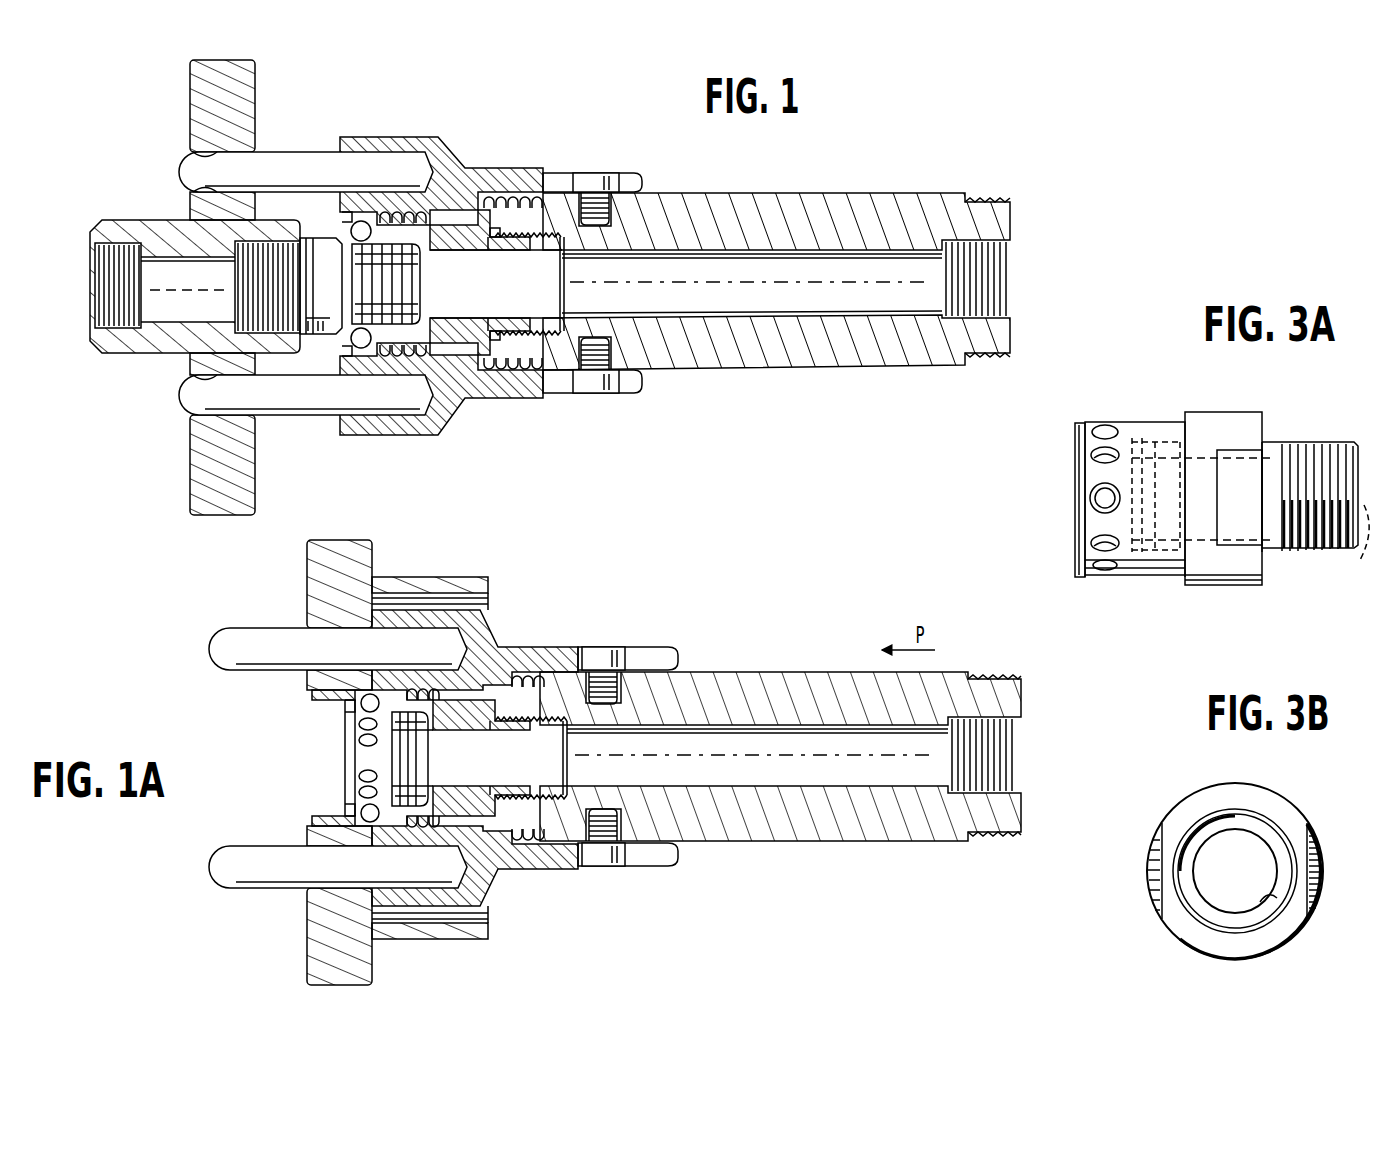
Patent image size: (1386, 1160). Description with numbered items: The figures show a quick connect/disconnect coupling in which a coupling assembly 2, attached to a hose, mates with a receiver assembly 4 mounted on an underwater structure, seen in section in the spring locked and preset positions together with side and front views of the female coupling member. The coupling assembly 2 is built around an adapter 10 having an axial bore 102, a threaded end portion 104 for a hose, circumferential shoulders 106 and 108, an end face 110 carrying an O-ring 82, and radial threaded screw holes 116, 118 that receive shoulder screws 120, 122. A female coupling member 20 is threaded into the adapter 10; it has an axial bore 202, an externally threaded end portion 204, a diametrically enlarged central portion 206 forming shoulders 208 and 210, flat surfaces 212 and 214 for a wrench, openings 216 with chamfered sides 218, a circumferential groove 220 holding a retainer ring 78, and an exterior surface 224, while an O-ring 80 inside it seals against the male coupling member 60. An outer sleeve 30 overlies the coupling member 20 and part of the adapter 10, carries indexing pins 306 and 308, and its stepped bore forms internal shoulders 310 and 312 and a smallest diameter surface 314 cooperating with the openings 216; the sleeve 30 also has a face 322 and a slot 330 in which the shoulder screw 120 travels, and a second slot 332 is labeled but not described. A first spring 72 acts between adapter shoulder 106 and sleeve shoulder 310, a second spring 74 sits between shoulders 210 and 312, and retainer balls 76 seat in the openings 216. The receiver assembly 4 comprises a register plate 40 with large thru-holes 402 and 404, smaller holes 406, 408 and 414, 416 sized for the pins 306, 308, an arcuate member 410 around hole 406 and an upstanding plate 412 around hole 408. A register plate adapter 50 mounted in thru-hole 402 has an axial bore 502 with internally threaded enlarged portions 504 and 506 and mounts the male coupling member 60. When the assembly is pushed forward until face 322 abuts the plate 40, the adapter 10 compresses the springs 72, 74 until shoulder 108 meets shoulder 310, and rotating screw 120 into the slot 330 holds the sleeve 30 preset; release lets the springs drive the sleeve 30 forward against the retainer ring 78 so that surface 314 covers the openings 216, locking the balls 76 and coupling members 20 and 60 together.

In FIG. 1, the coupling assembly 2 is at (746, 390).
In FIG. 1A, the coupling assembly 2 is at (852, 844).
In FIG. 1, the receiver assembly 4 is at (140, 452).
In FIG. 1, the adapter member 10 is at (780, 194).
In FIG. 1A, the adapter member 10 is at (752, 672).
In FIG. 1, the female coupling member 20 is at (470, 400).
In FIG. 1A, the female coupling member 20 is at (445, 758).
In FIG. 3A, the female coupling member 20 is at (1250, 404).
In FIG. 3B, the female coupling member 20 is at (1295, 800).
In FIG. 1, the outer sleeve 30 is at (508, 168).
In FIG. 1, the register plate 40 is at (195, 497).
In FIG. 1A, the register plate 40 is at (305, 940).
In FIG. 1, the register plate adapter 50 is at (112, 352).
In FIG. 1, the male coupling member 60 is at (310, 294).
In FIG. 1, the first spring 72 is at (508, 398).
In FIG. 1A, the first spring 72 is at (520, 676).
In FIG. 1, the second spring 74 is at (402, 362).
In FIG. 1A, the second spring 74 is at (421, 689).
In FIG. 1, the retainer balls 76 is at (352, 343).
In FIG. 1A, the retainer balls 76 is at (362, 810).
In FIG. 1, the retainer ring 78 is at (356, 221).
In FIG. 1, the O-ring 80 is at (392, 322).
In FIG. 1A, the O-ring 80 is at (412, 759).
In FIG. 1, the O-ring 82 is at (480, 250).
In FIG. 1, the axial bore 102 is at (777, 294).
In FIG. 1, the threaded end portion 104 is at (987, 201).
In FIG. 1, the circumferential shoulder 106 is at (540, 192).
In FIG. 1A, the circumferential shoulder 106 is at (548, 862).
In FIG. 1, the circumferential shoulder 108 is at (510, 335).
In FIG. 1A, the end face 110 is at (476, 846).
In FIG. 1, the threaded screw hole 116 is at (610, 213).
In FIG. 1, the threaded screw hole 118 is at (612, 345).
In FIG. 1, the shoulder screw 120 is at (598, 172).
In FIG. 1A, the shoulder screw 120 is at (604, 647).
In FIG. 1, the shoulder screw 122 is at (612, 395).
In FIG. 1A, the shoulder screw 122 is at (606, 867).
In FIG. 1, the axial bore 202 is at (566, 312).
In FIG. 1A, the axial bore 202 is at (531, 758).
In FIG. 3A, the axial bore 202 is at (1362, 556).
In FIG. 3B, the axial bore 202 is at (1290, 905).
In FIG. 3A, the threaded end portion 204 is at (1322, 445).
In FIG. 3B, the threaded end portion 204 is at (1200, 918).
In FIG. 3A, the central portion 206 is at (1202, 412).
In FIG. 3B, the central portion 206 is at (1178, 812).
In FIG. 1, the circumferential shoulder 208 is at (488, 330).
In FIG. 1A, the circumferential shoulder 208 is at (488, 795).
In FIG. 3A, the circumferential shoulder 208 is at (1266, 430).
In FIG. 3B, the circumferential shoulder 208 is at (1283, 940).
In FIG. 1, the circumferential shoulder 210 is at (480, 282).
In FIG. 1A, the circumferential shoulder 210 is at (432, 812).
In FIG. 3A, the circumferential shoulder 210 is at (1184, 428).
In FIG. 3A, the flat surface 212 is at (1225, 504).
In FIG. 3B, the flat surface 212 is at (1160, 875).
In FIG. 3B, the flat surface 214 is at (1318, 876).
In FIG. 3A, the openings 216 is at (1090, 462).
In FIG. 3A, the chamfered sides 218 is at (1090, 545).
In FIG. 3A, the circumferential groove 220 is at (1082, 420).
In FIG. 3A, the exterior surface 224 is at (1100, 578).
In FIG. 1, the indexing pin 306 is at (282, 156).
In FIG. 1A, the indexing pin 306 is at (215, 650).
In FIG. 1, the indexing pin 308 is at (300, 414).
In FIG. 1A, the indexing pin 308 is at (215, 870).
In FIG. 1, the internal shoulder 310 is at (490, 195).
In FIG. 1A, the internal shoulder 310 is at (520, 862).
In FIG. 1, the internal shoulder 312 is at (387, 212).
In FIG. 1A, the internal shoulder 312 is at (415, 830).
In FIG. 1A, the internal axial surface 314 is at (363, 758).
In FIG. 1A, the sleeve face 322 is at (375, 840).
In FIG. 1, the slot 330 is at (557, 172).
In FIG. 1A, the slot 330 is at (642, 647).
In FIG. 1, the lock ring 332 is at (553, 395).
In FIG. 1A, the lock ring 332 is at (655, 866).
In FIG. 1A, the thru-hole 402 is at (340, 700).
In FIG. 1, the thru-hole 404 is at (210, 220).
In FIG. 1A, the hole 406 is at (312, 628).
In FIG. 1A, the hole 408 is at (312, 846).
In FIG. 1A, the arcuately shaped member 410 is at (458, 583).
In FIG. 1A, the upstanding plate 412 is at (495, 935).
In FIG. 1, the thru-hole 414 is at (195, 158).
In FIG. 1, the thru-hole 416 is at (195, 382).
In FIG. 1, the internal axial bore 502 is at (161, 294).
In FIG. 1, the internally threaded enlarged diameter portion 504 is at (100, 268).
In FIG. 1, the internally threaded enlarged diameter portion 506 is at (225, 258).